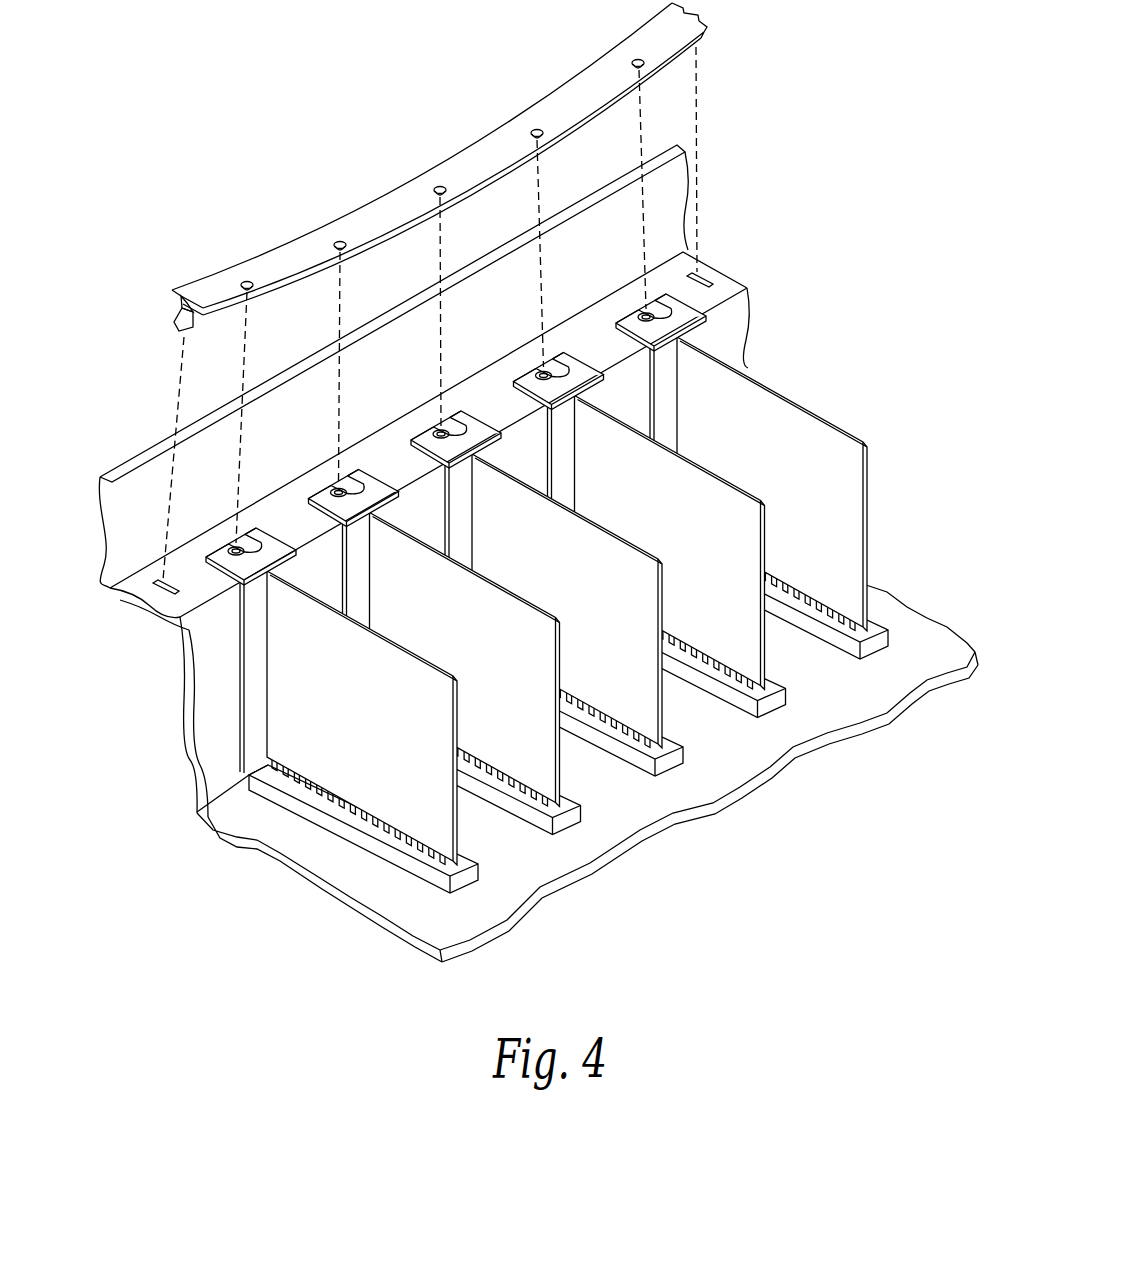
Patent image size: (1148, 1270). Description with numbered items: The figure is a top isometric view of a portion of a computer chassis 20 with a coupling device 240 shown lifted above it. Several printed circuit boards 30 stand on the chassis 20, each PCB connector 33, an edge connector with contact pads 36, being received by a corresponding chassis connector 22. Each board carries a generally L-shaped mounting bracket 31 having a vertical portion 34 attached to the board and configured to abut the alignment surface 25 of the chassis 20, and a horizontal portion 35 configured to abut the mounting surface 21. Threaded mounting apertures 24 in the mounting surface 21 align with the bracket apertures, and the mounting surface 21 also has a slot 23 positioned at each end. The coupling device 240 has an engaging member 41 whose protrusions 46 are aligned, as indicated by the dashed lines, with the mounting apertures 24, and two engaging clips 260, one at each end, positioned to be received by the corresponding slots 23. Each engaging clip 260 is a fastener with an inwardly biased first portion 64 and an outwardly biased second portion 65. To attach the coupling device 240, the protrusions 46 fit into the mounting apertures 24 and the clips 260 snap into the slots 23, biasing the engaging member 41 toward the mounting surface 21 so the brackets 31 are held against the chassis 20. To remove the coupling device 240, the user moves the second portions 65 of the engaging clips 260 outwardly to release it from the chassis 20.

The computer chassis 20 is at (130, 462).
The mounting surface 21 is at (173, 611).
The chassis connectors 22 is at (445, 884).
The slots 23 is at (162, 584).
The threaded mounting apertures 24 is at (234, 552).
The alignment surface 25 is at (205, 648).
The printed circuit boards 30 is at (675, 722).
The mounting bracket 31 is at (240, 733).
The PCB connectors 33 is at (341, 775).
The vertical portion 34 is at (243, 673).
The horizontal portion 35 is at (630, 320).
The contact pads 36 is at (530, 796).
The engaging member 41 is at (300, 283).
The protrusions 46 is at (254, 295).
The first portion 64 is at (170, 304).
The second portion 65 is at (193, 328).
The coupling device 240 is at (414, 201).
The engaging clips 260 is at (715, 42).